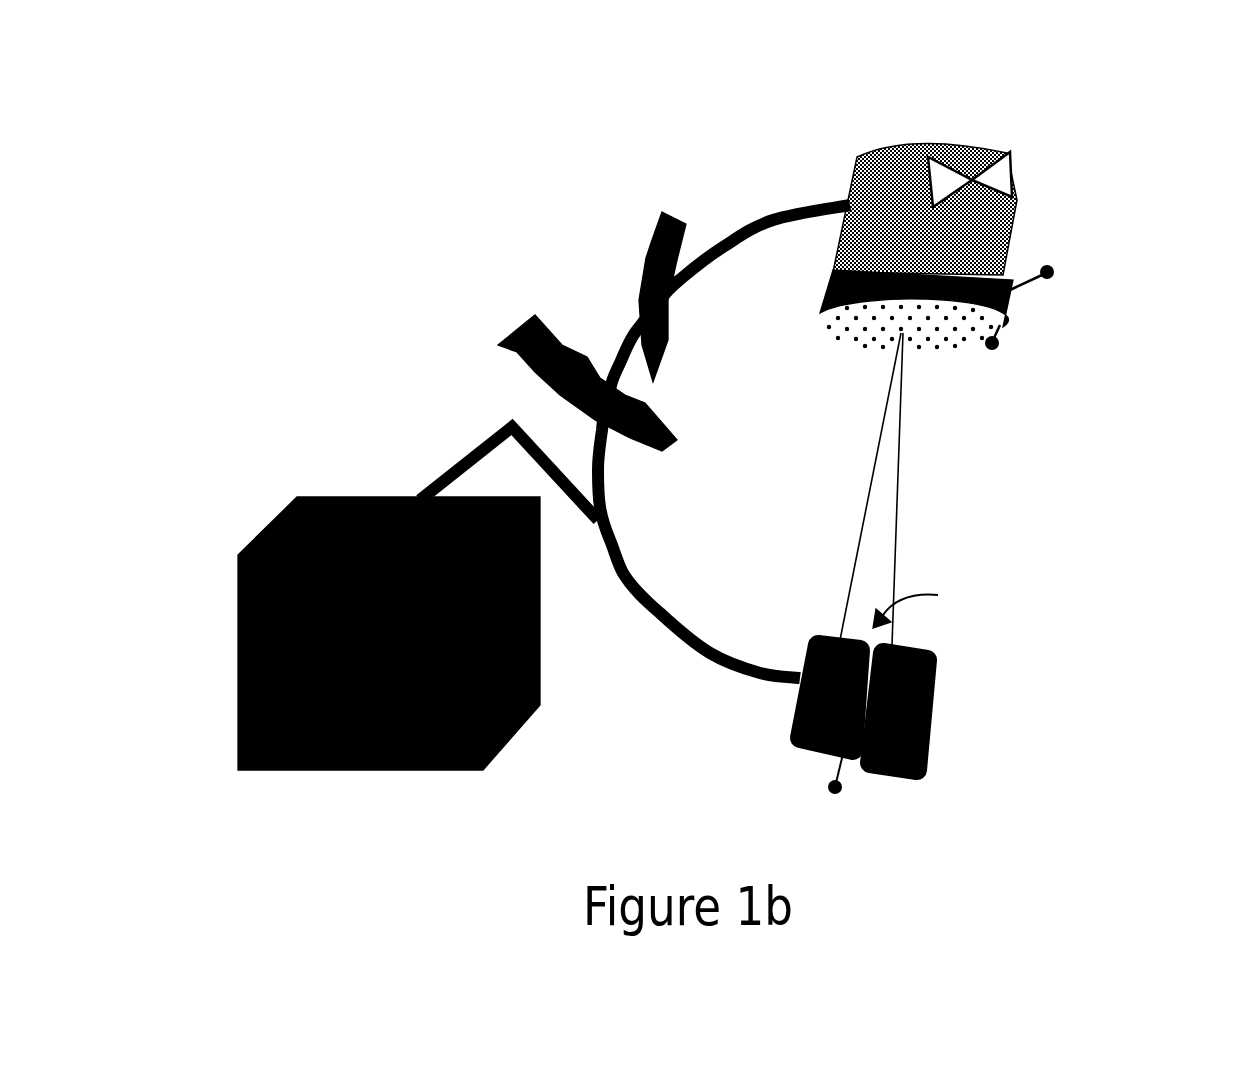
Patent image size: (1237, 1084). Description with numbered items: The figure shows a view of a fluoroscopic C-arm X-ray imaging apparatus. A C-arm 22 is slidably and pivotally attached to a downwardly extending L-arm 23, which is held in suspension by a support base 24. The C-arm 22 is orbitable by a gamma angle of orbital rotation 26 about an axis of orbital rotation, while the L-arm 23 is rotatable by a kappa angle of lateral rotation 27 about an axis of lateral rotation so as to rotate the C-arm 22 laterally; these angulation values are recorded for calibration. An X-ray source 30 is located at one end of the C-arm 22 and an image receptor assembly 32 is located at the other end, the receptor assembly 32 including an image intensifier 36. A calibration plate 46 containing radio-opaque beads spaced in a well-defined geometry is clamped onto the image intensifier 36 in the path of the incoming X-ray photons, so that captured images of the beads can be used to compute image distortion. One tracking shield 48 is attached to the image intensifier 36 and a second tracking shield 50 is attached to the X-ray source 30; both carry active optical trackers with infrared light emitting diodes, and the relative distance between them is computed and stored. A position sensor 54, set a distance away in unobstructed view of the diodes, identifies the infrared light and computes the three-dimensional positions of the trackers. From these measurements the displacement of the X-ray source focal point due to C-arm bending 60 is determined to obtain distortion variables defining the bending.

The C-arm 22 is at (727, 255).
The L-arm 23 is at (433, 480).
The support base 24 is at (238, 601).
The orbital rotation γ degrees 26 is at (617, 277).
The lateral rotation κ degrees (axis of rotation) 27 is at (533, 369).
The X-ray source 30 is at (937, 703).
The image receptor assembly 32 is at (1023, 239).
The image intensifier 36 is at (832, 287).
The calibration plate 46 is at (937, 330).
The tracking shield 48 is at (1010, 290).
The tracking shield 50 is at (862, 762).
The position sensor 54 is at (1012, 152).
The displacement of the C-arm X-ray source focal point due to bending (Δf) 60 is at (959, 494).